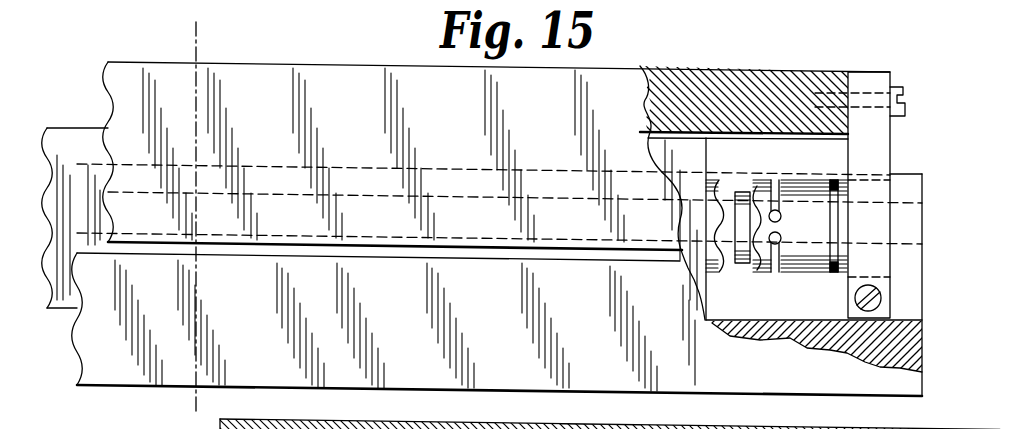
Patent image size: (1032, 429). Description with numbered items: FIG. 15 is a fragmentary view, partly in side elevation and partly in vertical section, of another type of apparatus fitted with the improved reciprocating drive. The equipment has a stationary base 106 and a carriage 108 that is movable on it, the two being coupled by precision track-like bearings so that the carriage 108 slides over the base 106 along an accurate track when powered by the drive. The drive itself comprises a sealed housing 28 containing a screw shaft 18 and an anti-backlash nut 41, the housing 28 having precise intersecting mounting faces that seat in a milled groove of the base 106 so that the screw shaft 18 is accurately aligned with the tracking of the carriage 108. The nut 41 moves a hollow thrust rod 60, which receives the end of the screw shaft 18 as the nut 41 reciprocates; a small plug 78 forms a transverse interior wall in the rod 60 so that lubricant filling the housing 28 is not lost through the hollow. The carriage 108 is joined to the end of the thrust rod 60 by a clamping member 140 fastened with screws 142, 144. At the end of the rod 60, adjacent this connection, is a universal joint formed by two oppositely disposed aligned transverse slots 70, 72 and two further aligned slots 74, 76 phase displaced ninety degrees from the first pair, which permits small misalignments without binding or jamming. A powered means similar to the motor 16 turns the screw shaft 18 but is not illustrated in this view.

The motor 16 is at (188, 43).
The carriage 108 is at (283, 77).
The stationary base 106 is at (91, 370).
The thrust rod 60 is at (718, 200).
The transverse slot 70 is at (775, 188).
The transverse slot 72 is at (776, 275).
The transverse slot 74 is at (830, 217).
The transverse slot 76 is at (834, 226).
The plug 78 is at (745, 252).
The clamping member 140 is at (880, 152).
The screw 142 is at (902, 85).
The screw 144 is at (856, 296).
The screw shaft 18 is at (545, 426).
The anti-backlash nut 41 is at (586, 426).
The housing 28 is at (628, 426).